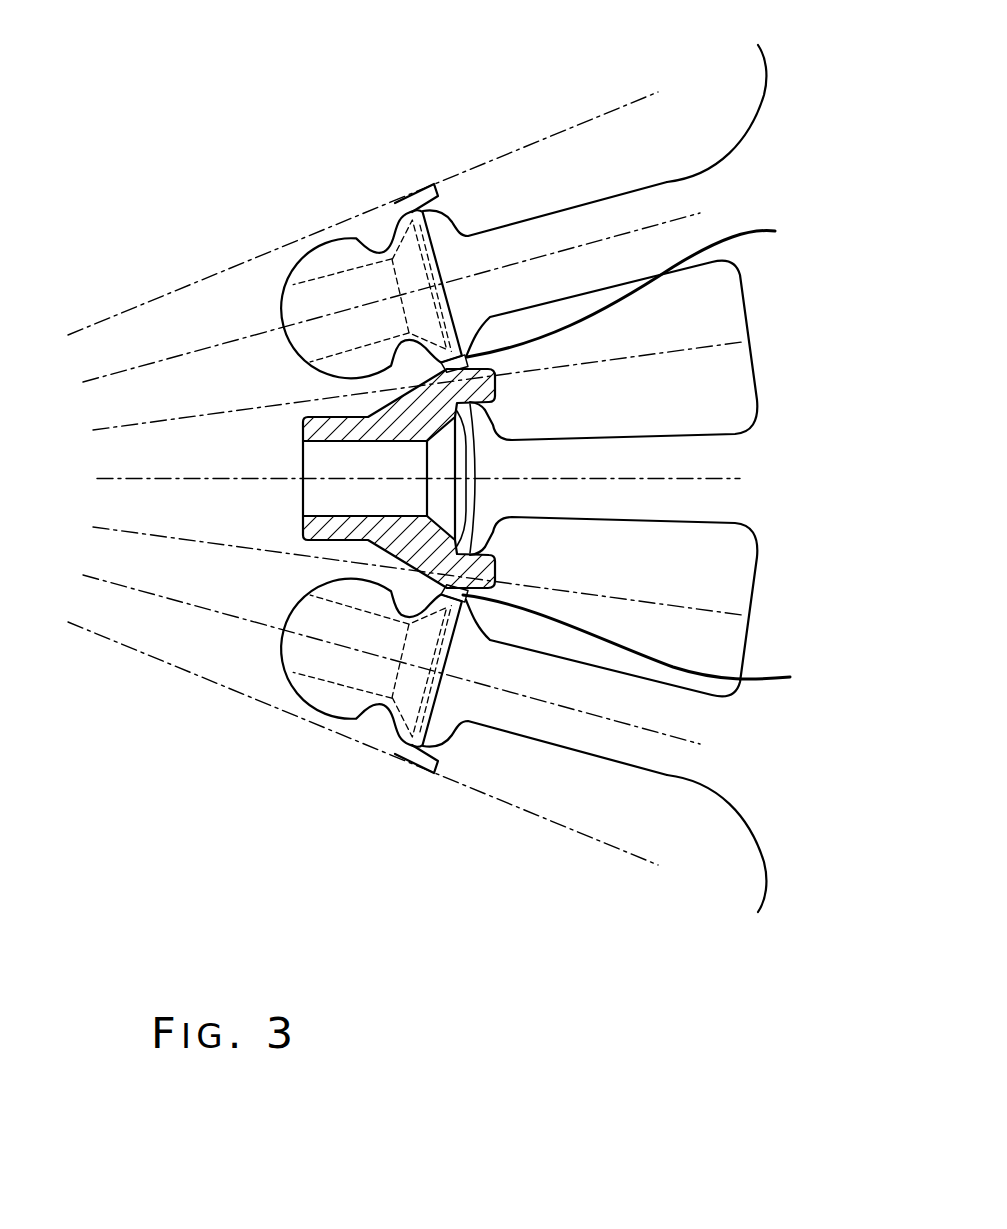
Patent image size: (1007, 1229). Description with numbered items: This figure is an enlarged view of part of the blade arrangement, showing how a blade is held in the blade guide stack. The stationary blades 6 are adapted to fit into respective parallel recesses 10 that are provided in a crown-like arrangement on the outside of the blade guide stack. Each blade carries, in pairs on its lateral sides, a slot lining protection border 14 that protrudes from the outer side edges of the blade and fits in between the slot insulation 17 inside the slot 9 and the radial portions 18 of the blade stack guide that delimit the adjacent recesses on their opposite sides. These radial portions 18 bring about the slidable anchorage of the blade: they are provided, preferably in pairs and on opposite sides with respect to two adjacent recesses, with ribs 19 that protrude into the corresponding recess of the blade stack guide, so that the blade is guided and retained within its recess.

The stationary blades 6 is at (338, 297).
The slot 9 is at (727, 126).
The parallel recesses 10 is at (283, 317).
The slot lining protection border 14 is at (645, 453).
The slot insulation 17 is at (665, 183).
The radial portions 18 is at (440, 192).
The ribs 19 is at (373, 238).